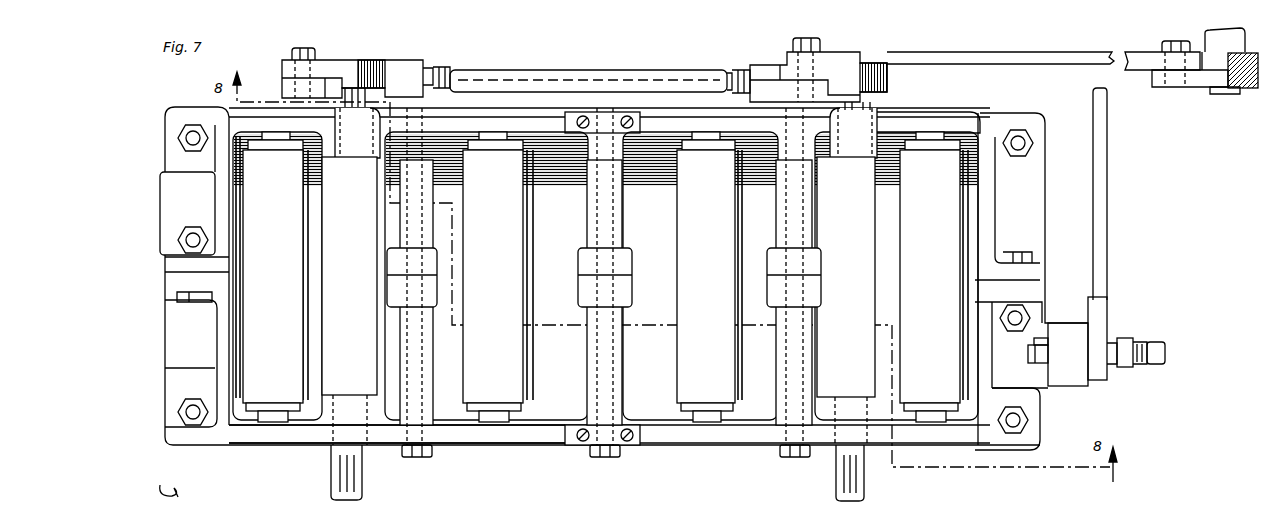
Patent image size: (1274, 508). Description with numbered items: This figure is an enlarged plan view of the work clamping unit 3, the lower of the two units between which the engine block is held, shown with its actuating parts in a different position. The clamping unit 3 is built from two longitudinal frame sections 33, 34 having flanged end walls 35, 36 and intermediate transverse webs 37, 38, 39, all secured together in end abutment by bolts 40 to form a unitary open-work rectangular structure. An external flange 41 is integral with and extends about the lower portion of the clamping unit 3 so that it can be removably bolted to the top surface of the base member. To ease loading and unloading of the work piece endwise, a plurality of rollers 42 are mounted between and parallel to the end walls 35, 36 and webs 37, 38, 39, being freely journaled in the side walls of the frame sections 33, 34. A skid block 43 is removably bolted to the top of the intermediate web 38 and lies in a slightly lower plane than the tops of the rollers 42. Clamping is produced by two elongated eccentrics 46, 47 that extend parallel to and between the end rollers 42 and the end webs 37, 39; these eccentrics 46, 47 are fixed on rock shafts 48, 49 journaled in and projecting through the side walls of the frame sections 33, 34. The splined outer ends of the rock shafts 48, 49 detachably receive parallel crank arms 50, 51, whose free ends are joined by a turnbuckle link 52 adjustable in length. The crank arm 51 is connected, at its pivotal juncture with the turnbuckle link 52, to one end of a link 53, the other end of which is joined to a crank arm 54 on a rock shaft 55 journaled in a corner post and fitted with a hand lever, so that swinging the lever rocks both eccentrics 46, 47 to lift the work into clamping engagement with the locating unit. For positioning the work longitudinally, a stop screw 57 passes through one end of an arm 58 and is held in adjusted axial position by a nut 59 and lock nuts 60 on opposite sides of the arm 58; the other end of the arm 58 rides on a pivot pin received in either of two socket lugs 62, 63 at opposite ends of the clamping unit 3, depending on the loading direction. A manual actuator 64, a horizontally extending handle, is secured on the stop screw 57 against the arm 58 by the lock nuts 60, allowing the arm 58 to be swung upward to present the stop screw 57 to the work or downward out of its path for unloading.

The clamping unit 3 is at (170, 367).
The longitudinal frame section 33 is at (553, 442).
The longitudinal frame section 34 is at (912, 117).
The flanged end wall 35 is at (222, 213).
The flanged end wall 36 is at (993, 226).
The intermediate transverse web 37 is at (403, 233).
The intermediate transverse web 38 is at (618, 239).
The intermediate transverse web 39 is at (803, 233).
The bolt 40 is at (425, 455).
The external flange 41 is at (1044, 222).
The roller 42 is at (301, 263).
The skid block 43 is at (638, 113).
The elongated eccentric 46 is at (367, 353).
The elongated eccentric 47 is at (858, 386).
The rock shaft 48 is at (342, 477).
The rock shaft 49 is at (842, 482).
The crank arm 50 is at (327, 62).
The crank arm 51 is at (822, 64).
The turnbuckle link 52 is at (678, 70).
The link 53 is at (1056, 58).
The crank arm 54 is at (1203, 82).
The rock shaft 55 is at (1236, 90).
The stop screw 57 is at (1030, 354).
The arm 58 is at (1072, 386).
The nut 59 is at (1040, 338).
The lock nut 60 is at (1114, 340).
The socket lug 62 is at (1035, 385).
The socket lug 63 is at (160, 202).
The manual actuator 64 is at (1105, 243).